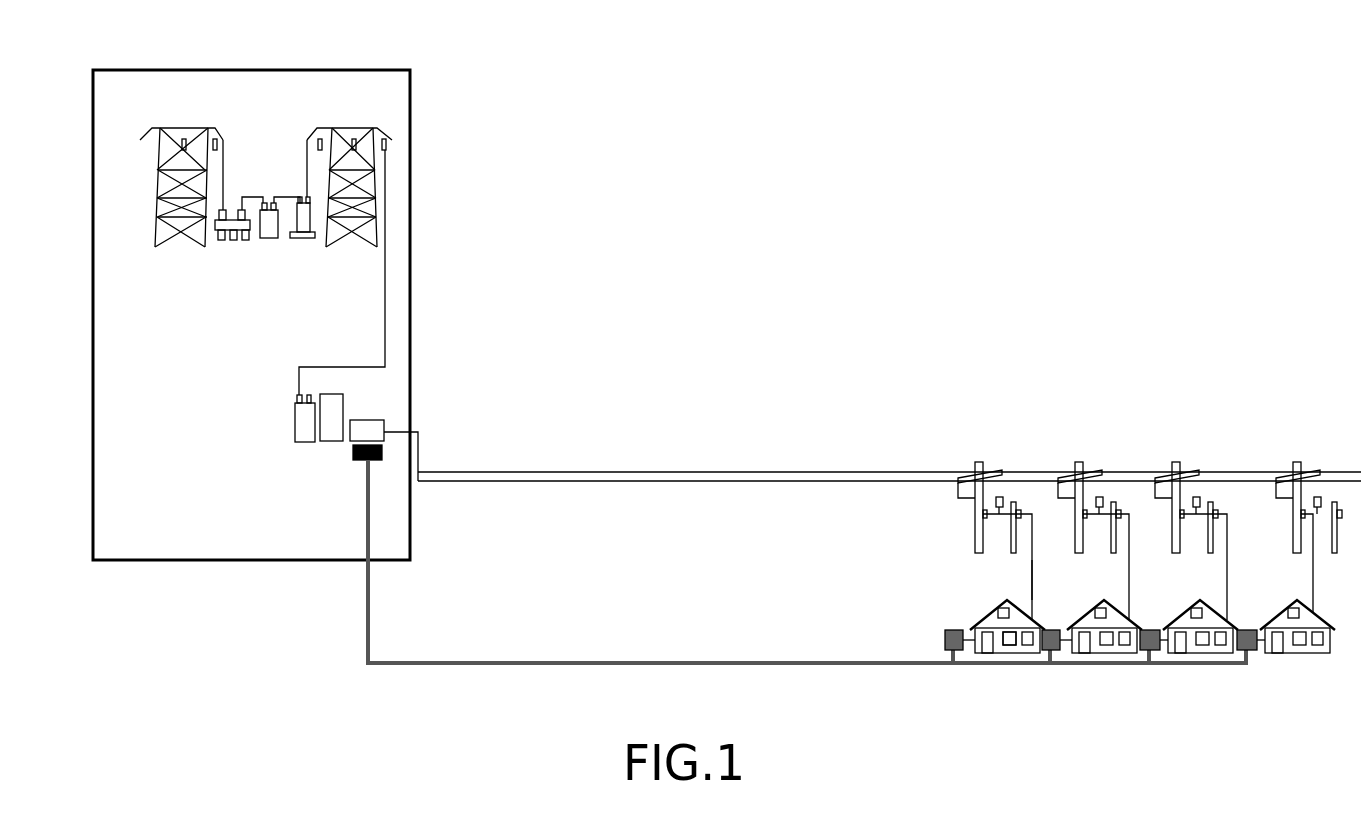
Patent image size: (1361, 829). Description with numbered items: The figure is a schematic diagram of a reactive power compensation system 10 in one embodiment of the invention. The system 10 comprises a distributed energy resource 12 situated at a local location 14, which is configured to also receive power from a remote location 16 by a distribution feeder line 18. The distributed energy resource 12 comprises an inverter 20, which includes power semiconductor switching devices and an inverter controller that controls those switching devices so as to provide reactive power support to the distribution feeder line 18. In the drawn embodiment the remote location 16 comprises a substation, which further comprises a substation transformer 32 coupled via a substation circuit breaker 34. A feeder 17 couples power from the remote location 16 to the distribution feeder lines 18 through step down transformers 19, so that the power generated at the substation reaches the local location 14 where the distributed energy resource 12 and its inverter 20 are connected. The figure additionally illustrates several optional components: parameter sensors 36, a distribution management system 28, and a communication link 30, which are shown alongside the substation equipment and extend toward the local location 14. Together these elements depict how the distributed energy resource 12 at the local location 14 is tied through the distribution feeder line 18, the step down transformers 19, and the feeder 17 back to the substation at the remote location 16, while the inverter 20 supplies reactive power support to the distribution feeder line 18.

The reactive power compensation system 10 is at (976, 707).
The distributed energy resource 12 is at (960, 607).
The local location 14 is at (1012, 645).
The remote location 16 is at (397, 98).
The feeder 17 is at (610, 473).
The distribution feeder line 18 is at (1032, 580).
The step down transformers 19 is at (960, 532).
The inverter 20 is at (945, 638).
The distribution management system 28 is at (380, 458).
The communication link 30 is at (532, 665).
The substation transformer 32 is at (300, 440).
The substation circuit breaker 34 is at (332, 407).
The parameter sensors 36 is at (370, 430).